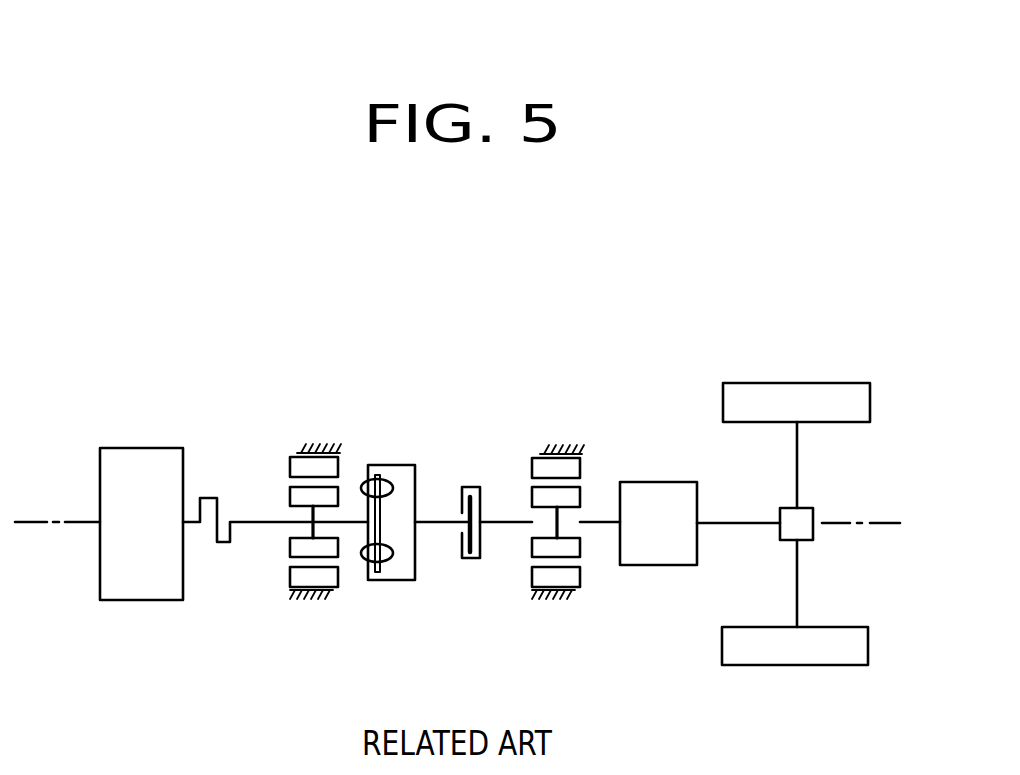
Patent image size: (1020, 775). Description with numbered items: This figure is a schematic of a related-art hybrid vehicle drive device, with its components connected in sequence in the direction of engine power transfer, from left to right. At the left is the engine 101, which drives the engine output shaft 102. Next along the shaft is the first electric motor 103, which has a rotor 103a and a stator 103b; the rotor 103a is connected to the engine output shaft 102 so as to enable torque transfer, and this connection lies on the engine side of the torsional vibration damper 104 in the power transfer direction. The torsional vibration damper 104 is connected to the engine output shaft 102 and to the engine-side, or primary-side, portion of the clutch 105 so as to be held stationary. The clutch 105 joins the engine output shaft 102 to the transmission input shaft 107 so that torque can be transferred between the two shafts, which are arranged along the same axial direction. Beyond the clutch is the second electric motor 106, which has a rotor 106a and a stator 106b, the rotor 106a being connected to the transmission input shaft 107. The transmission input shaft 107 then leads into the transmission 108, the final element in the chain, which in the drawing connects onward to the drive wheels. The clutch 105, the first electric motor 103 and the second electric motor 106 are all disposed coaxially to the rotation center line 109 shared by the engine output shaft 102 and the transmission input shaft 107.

The engine 101 is at (128, 447).
The engine output shaft 102 is at (248, 520).
The first electric motor 103 is at (305, 494).
The rotor 103a is at (289, 548).
The stator 103b is at (339, 577).
The torsional vibration damper 104 is at (392, 464).
The clutch 105 is at (470, 486).
The second electric motor 106 is at (551, 493).
The rotor 106a is at (531, 548).
The stator 106b is at (581, 577).
The transmission input shaft 107 is at (600, 521).
The transmission 108 is at (699, 543).
The rotation center line 109 is at (838, 523).